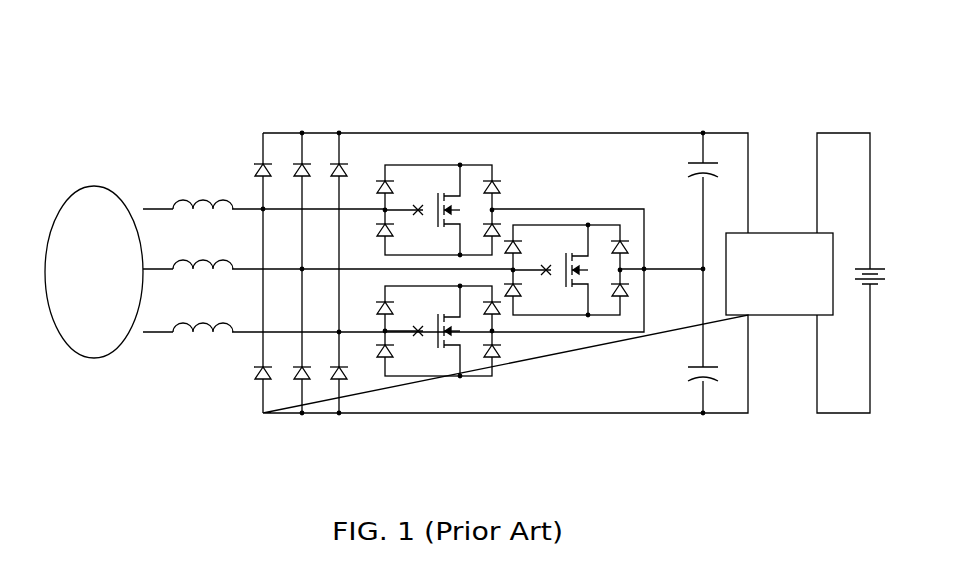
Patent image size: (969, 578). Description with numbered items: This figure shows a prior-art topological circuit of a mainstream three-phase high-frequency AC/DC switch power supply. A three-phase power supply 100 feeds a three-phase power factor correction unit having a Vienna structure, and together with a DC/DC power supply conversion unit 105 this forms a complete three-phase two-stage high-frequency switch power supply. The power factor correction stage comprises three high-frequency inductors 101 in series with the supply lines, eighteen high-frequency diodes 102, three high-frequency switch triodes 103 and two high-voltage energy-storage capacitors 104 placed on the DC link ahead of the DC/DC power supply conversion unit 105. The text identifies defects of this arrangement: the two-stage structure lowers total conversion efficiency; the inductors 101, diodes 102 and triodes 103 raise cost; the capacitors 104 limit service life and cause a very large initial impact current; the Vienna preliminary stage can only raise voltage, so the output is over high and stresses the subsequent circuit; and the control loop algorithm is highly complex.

The three-phase power supply 100 is at (94, 187).
The high-frequency inductors 101 is at (209, 209).
The diodes 102 is at (302, 168).
The triodes 103 is at (460, 165).
The energy-storage capacitors 104 is at (705, 163).
The DC/DC power supply conversion unit 105 is at (770, 233).